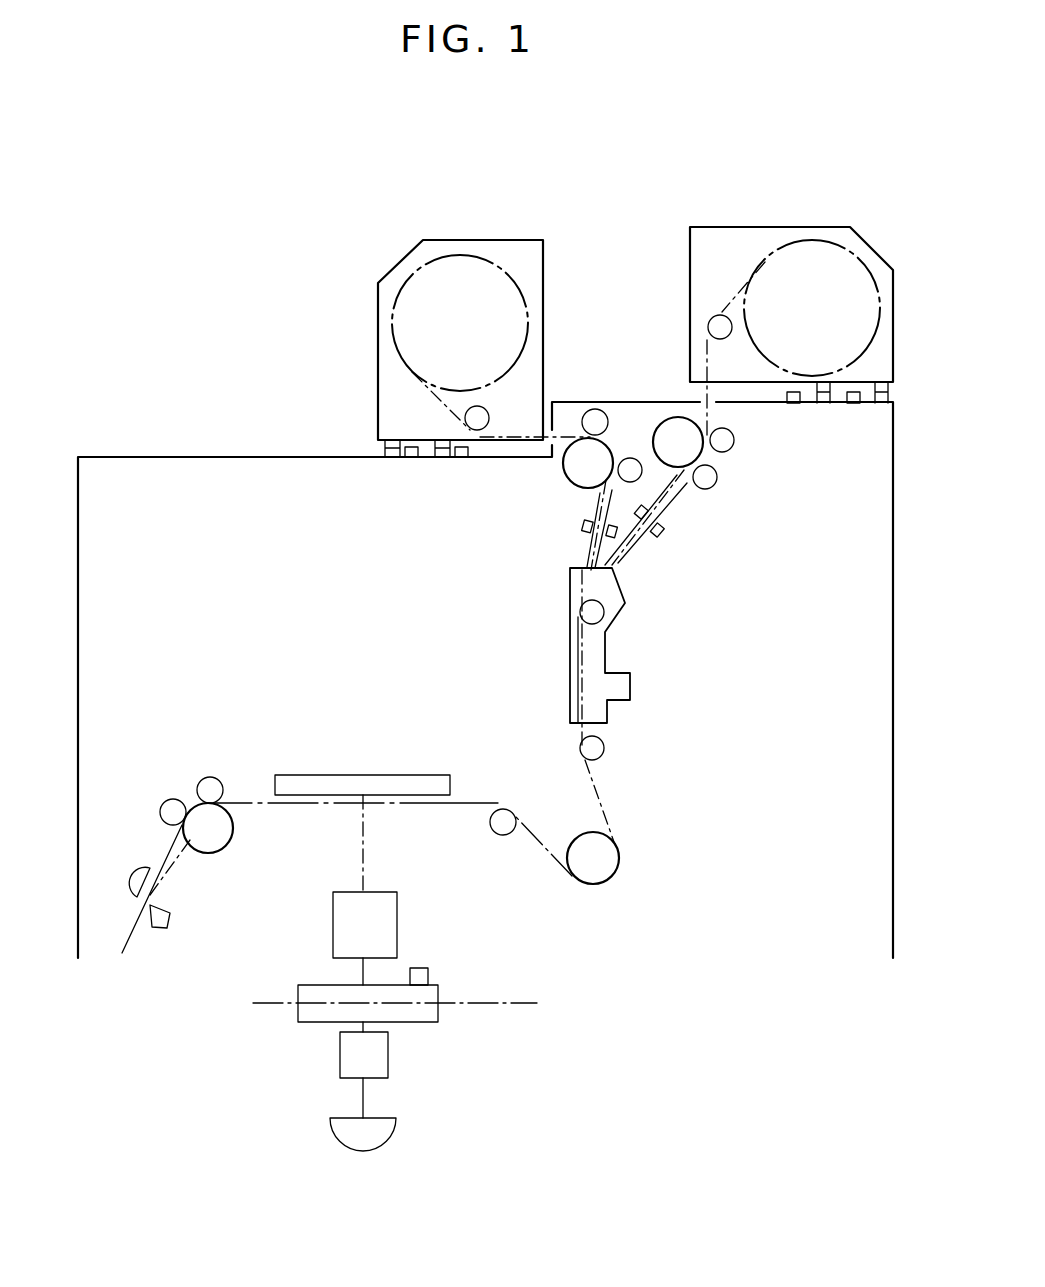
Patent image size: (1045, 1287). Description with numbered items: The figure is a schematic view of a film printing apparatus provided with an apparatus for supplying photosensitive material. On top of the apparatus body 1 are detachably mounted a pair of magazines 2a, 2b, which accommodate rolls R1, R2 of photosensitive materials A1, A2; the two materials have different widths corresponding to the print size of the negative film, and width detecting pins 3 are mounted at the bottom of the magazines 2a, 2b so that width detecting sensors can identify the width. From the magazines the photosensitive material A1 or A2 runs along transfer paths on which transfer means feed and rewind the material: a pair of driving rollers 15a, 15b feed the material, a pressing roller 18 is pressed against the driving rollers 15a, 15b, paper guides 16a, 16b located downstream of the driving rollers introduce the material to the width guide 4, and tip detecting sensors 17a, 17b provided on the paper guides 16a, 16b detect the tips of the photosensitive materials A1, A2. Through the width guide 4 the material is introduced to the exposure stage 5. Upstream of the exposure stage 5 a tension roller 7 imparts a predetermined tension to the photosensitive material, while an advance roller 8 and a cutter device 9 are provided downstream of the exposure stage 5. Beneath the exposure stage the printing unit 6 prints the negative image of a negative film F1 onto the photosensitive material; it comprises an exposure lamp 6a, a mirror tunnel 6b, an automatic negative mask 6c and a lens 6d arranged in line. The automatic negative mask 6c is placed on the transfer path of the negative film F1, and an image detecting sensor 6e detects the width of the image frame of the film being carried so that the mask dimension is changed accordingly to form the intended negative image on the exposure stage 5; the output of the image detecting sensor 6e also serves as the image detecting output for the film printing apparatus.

The apparatus body 1 is at (197, 457).
The magazine 2a is at (443, 240).
The magazine 2b is at (723, 227).
The roll R1 is at (490, 256).
The roll R2 is at (812, 240).
The width detecting pins 3 is at (380, 437).
The photosensitive material A1 is at (568, 435).
The photosensitive material A2 is at (718, 312).
The driving roller 15a is at (575, 470).
The driving roller 15b is at (695, 450).
The paper guide 16a is at (590, 545).
The paper guide 16b is at (635, 550).
The tip detecting sensor 17a is at (586, 530).
The tip detecting sensor 17b is at (662, 536).
The pressing roller 18 is at (602, 412).
The width guide 4 is at (570, 648).
The exposure stage 5 is at (352, 773).
The tension roller 7 is at (588, 877).
The advance roller 8 is at (220, 838).
The cutter device 9 is at (155, 932).
The printing unit 6 is at (369, 973).
The exposure lamp 6a is at (395, 1123).
The mirror tunnel 6b is at (388, 1068).
The automatic negative mask 6c is at (438, 987).
The lens 6d is at (392, 910).
The image detecting sensor 6e is at (428, 970).
The negative film F1 is at (495, 1010).